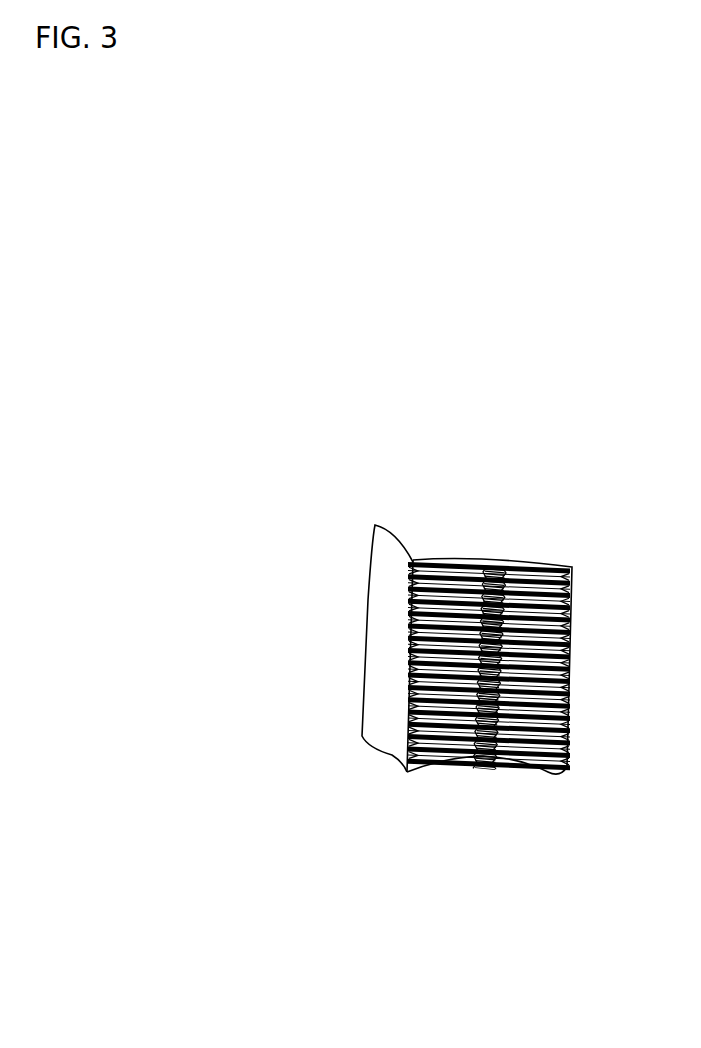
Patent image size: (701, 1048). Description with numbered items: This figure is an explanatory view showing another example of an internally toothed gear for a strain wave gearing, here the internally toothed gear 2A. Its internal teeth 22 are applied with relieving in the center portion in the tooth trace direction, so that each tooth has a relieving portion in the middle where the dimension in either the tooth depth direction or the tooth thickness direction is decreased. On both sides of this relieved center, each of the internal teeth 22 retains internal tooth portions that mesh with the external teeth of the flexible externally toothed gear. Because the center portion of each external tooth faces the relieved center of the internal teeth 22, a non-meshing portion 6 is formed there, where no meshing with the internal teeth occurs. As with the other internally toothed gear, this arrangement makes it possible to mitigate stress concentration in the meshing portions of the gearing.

The internally toothed gear 2A is at (425, 658).
The internal teeth 22 is at (509, 591).
The non-meshing portion 6 is at (485, 762).